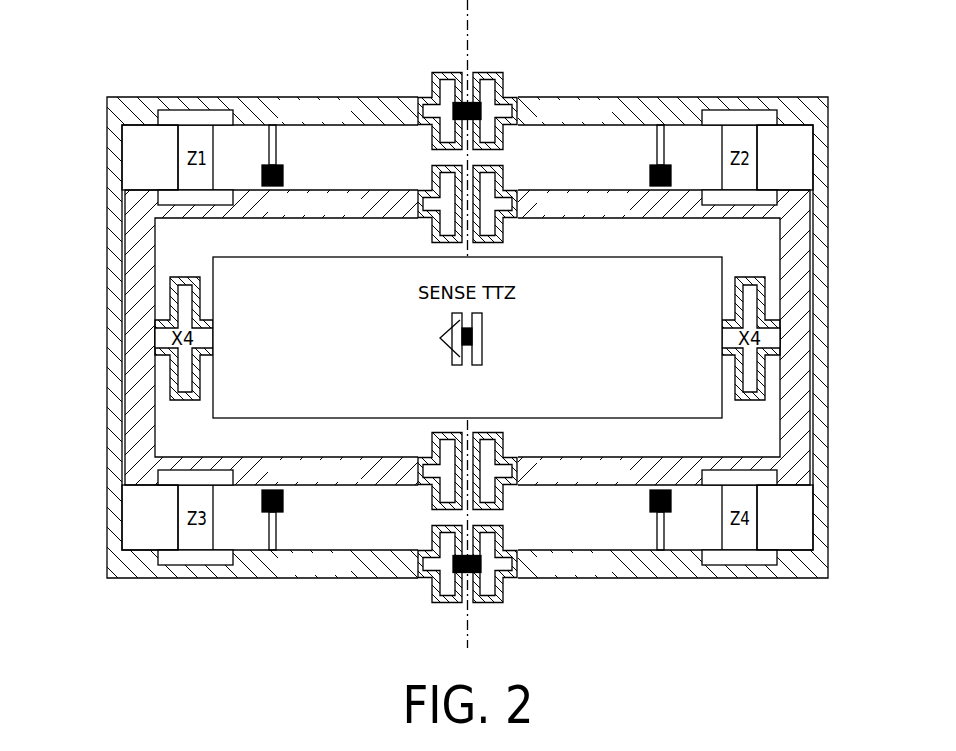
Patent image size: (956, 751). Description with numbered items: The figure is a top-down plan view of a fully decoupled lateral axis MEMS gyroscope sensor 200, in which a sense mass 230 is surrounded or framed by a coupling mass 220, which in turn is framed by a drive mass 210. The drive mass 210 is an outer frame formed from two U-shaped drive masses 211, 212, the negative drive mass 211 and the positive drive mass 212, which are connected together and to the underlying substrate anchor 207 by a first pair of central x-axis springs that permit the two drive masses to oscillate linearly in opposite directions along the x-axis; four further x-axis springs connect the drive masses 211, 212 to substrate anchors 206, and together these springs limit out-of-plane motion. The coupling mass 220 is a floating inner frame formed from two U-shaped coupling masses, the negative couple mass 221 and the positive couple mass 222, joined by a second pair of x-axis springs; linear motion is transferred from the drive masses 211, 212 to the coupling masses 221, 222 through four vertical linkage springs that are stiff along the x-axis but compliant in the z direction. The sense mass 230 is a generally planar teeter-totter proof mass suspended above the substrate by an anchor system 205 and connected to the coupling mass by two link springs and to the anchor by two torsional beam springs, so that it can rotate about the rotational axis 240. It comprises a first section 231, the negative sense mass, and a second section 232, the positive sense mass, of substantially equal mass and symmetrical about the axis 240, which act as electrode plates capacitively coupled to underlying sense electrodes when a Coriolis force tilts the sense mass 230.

The MEMS gyroscope sensor 200 is at (126, 37).
The anchor system 205 is at (483, 339).
The substrate anchor 206 is at (284, 178).
The substrate anchor 207 is at (484, 118).
The drive mass 210 is at (107, 306).
The negative drive mass 211 is at (383, 122).
The positive drive mass 212 is at (640, 103).
The coupling mass 220 is at (155, 436).
The negative couple mass 221 is at (383, 213).
The positive couple mass 222 is at (658, 213).
The sense mass 230 is at (212, 267).
The first section 231 is at (285, 383).
The second section 232 is at (592, 383).
The rotational axis 240 is at (466, 22).